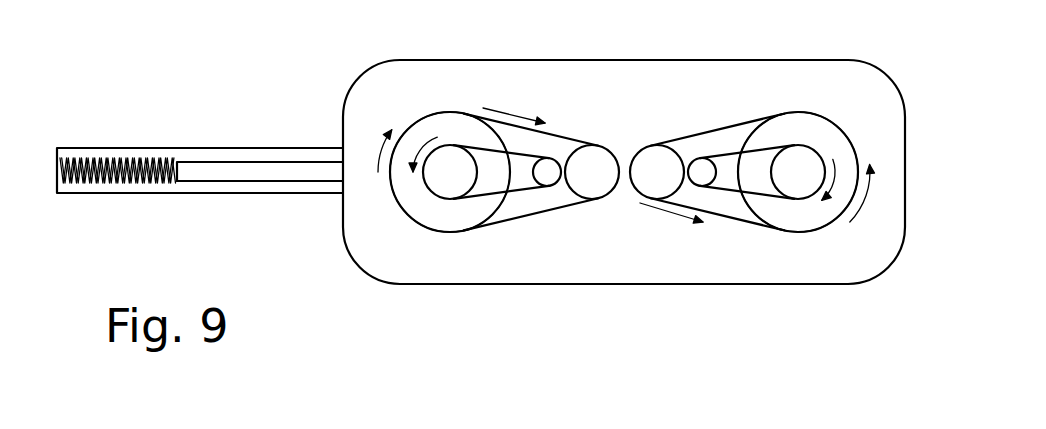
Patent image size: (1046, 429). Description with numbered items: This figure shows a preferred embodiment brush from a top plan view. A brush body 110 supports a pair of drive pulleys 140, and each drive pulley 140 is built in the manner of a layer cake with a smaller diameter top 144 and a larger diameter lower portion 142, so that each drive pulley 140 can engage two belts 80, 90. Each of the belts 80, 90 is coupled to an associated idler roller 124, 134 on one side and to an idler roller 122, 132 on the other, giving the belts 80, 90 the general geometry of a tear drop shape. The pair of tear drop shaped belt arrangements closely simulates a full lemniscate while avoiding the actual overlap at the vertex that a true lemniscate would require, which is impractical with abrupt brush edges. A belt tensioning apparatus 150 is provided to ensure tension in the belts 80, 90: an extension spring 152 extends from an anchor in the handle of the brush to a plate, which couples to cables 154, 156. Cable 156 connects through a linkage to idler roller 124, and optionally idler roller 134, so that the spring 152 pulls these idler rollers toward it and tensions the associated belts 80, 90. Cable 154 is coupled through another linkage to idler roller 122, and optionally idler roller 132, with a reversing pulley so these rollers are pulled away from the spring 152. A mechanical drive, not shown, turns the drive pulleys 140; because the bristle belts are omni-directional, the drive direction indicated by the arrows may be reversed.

The belt 80 is at (512, 218).
The belt 90 is at (532, 187).
The brush body 110 is at (370, 120).
The idler roller 122 is at (548, 157).
The idler roller 124 is at (703, 157).
The idler roller 132 is at (594, 146).
The idler roller 134 is at (662, 150).
The drive pulley 140 is at (427, 116).
The larger diameter lower portion 142 is at (445, 125).
The smaller diameter top 144 is at (445, 182).
The belt tensioning apparatus 150 is at (137, 158).
The extension spring 152 is at (167, 160).
The cable 154 is at (209, 160).
The cable 156 is at (252, 183).